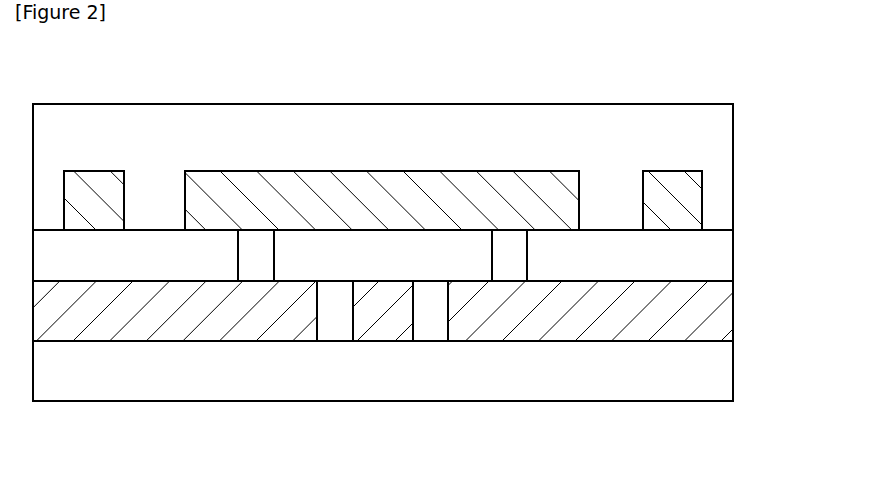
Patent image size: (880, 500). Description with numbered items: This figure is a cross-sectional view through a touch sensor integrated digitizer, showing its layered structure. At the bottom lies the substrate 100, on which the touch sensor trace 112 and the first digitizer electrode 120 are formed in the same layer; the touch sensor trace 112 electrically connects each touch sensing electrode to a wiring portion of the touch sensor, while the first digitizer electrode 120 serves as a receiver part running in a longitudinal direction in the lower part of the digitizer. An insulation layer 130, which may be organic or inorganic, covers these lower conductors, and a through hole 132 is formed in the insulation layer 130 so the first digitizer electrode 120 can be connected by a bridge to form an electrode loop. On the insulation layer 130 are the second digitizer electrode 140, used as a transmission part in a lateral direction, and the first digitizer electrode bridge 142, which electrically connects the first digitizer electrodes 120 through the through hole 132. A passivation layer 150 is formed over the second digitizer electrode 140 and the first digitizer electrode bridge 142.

The substrate 100 is at (713, 377).
The touch sensor trace 112 is at (380, 326).
The first digitizer electrode 120 is at (713, 307).
The insulation layer 130 is at (713, 257).
The through hole 132 is at (252, 265).
The second digitizer electrode 140 is at (690, 200).
The first digitizer electrode bridge 142 is at (255, 192).
The passivation layer 150 is at (712, 132).